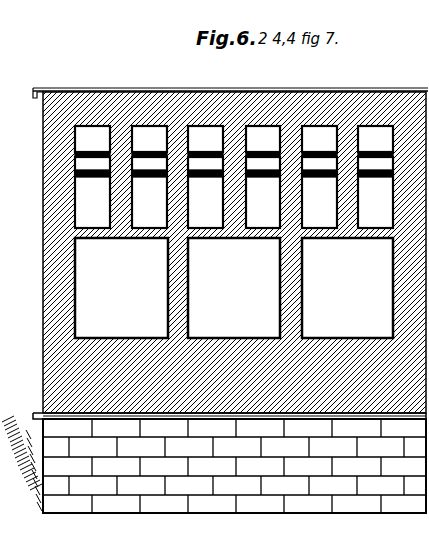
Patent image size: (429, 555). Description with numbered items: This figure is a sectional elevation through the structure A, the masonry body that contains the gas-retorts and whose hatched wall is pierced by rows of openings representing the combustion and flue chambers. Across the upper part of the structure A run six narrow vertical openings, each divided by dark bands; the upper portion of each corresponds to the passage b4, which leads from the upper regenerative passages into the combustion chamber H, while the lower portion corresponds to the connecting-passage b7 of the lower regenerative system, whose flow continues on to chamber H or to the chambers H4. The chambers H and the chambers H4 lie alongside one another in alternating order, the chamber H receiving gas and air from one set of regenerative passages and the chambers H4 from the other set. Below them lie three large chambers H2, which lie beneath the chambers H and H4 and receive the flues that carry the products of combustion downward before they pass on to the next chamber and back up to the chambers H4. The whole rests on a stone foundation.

The structure containing the gas-retorts A is at (214, 242).
The passage b4 is at (234, 141).
The connecting-passage b7 is at (234, 192).
The combustion-chamber H is at (204, 209).
The chambers H4 is at (260, 209).
The chamber H2 is at (234, 288).